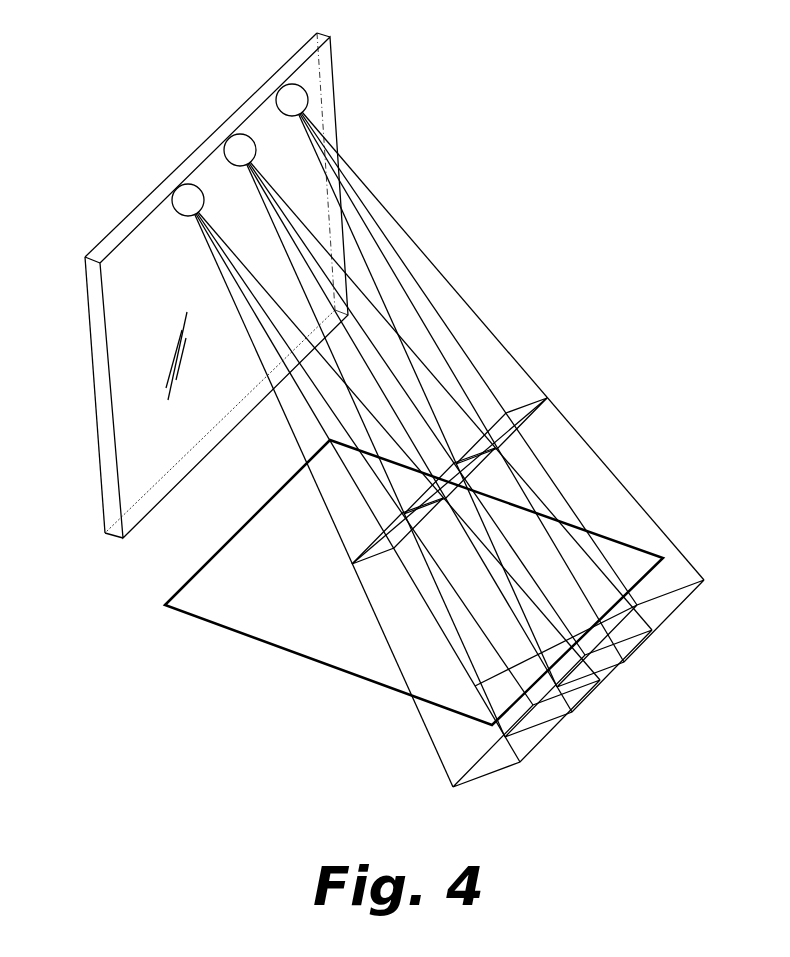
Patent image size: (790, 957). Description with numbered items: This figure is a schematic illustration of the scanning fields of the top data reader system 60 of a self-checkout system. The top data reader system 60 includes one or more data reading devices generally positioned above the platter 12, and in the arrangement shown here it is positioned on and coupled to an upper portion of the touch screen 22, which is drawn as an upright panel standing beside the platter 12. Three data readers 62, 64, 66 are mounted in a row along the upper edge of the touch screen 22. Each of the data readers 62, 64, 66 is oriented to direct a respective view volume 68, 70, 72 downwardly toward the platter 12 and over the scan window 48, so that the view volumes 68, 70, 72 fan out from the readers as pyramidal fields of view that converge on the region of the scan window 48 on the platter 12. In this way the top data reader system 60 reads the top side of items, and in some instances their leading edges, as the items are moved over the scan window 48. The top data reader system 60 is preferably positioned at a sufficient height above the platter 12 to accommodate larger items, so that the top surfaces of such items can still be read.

The platter 12 is at (263, 547).
The touch screen 22 is at (132, 330).
The scan window 48 is at (632, 562).
The top data reader system 60 is at (240, 80).
The data reader 62 is at (178, 187).
The data reader 64 is at (232, 140).
The data reader 66 is at (289, 92).
The view volume 68 is at (223, 273).
The view volume 70 is at (280, 227).
The view volume 72 is at (333, 182).